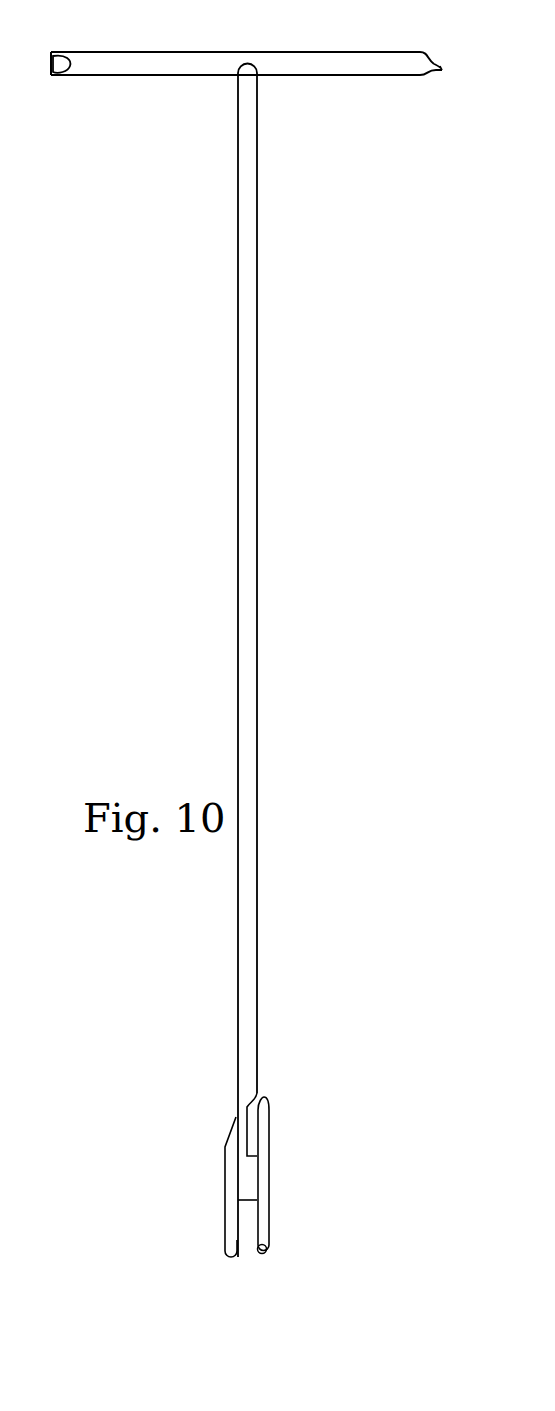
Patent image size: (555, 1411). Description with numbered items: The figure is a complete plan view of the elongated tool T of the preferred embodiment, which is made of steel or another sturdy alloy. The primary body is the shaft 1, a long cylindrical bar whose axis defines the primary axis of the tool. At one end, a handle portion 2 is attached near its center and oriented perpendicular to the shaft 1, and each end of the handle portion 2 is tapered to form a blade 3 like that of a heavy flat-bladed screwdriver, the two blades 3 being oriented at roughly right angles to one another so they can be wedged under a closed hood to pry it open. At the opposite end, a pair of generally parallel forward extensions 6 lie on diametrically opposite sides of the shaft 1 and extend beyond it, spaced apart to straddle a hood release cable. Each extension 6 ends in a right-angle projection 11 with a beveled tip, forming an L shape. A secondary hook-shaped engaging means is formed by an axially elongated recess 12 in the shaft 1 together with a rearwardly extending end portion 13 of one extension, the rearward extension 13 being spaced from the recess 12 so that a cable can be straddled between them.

The shaft 1 is at (243, 585).
The handle portion 2 is at (184, 61).
The blade 3 is at (57, 58).
The tool T is at (260, 570).
The forward extensions 6 is at (233, 1197).
The projection 11 is at (266, 1253).
The recess 12 is at (255, 1102).
The rearwardly extending end portion 13 is at (262, 1127).